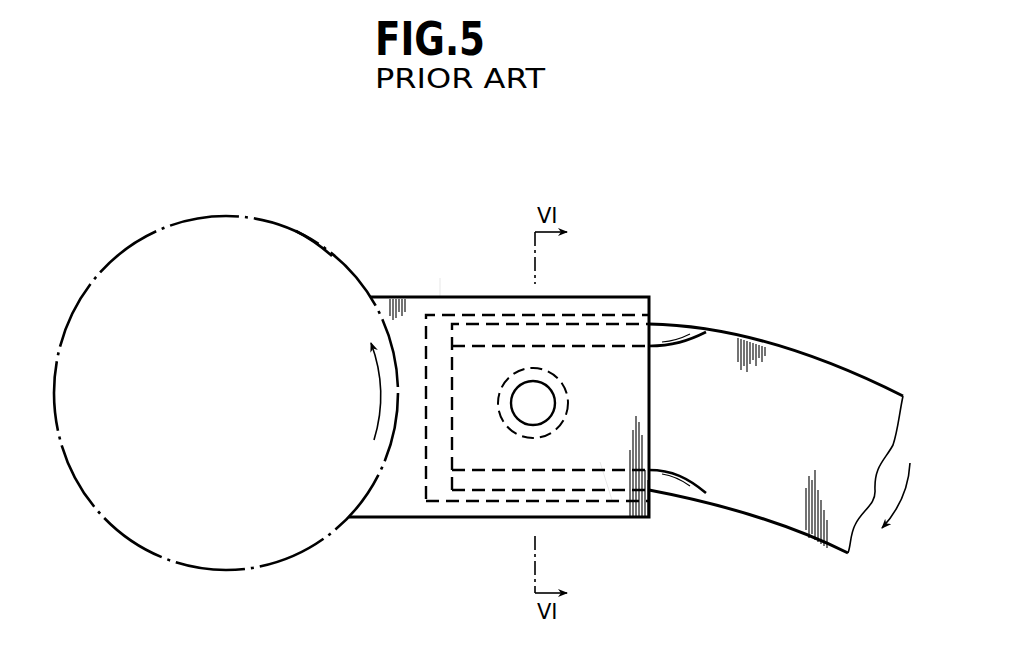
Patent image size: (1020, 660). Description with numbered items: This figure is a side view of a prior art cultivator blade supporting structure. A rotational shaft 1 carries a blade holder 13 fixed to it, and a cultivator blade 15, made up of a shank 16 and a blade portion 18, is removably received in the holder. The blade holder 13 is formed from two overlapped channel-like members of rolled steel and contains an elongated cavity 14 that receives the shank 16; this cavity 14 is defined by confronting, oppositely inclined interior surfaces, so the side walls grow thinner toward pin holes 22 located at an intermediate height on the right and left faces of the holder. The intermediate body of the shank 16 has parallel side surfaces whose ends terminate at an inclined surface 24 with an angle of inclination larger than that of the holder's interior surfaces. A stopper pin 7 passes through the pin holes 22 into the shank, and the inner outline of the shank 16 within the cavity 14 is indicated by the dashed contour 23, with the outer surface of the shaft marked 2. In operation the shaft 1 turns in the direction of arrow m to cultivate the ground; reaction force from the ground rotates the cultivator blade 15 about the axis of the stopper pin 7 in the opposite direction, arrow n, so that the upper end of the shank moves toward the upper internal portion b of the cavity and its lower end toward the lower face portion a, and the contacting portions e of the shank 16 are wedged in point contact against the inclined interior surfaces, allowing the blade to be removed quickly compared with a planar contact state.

The rotational shaft 1 is at (228, 216).
The drum surface 2 is at (316, 240).
The stopper pin 7 is at (546, 398).
The blade holder 13 is at (482, 294).
The elongated cavity 14 is at (430, 480).
The cultivator blade 15 is at (770, 340).
The shank 16 is at (600, 462).
The blade portion 18 is at (847, 378).
The pin holes 22 is at (520, 420).
The inner contact region 23 is at (455, 502).
The inclined surface 24 is at (672, 334).
The lower face portion a is at (647, 528).
The upper internal portion b is at (440, 278).
The contacting portions e is at (566, 336).
The rotating direction of the rotational shaft m is at (364, 391).
The turning direction of the cultivator blade n is at (896, 506).